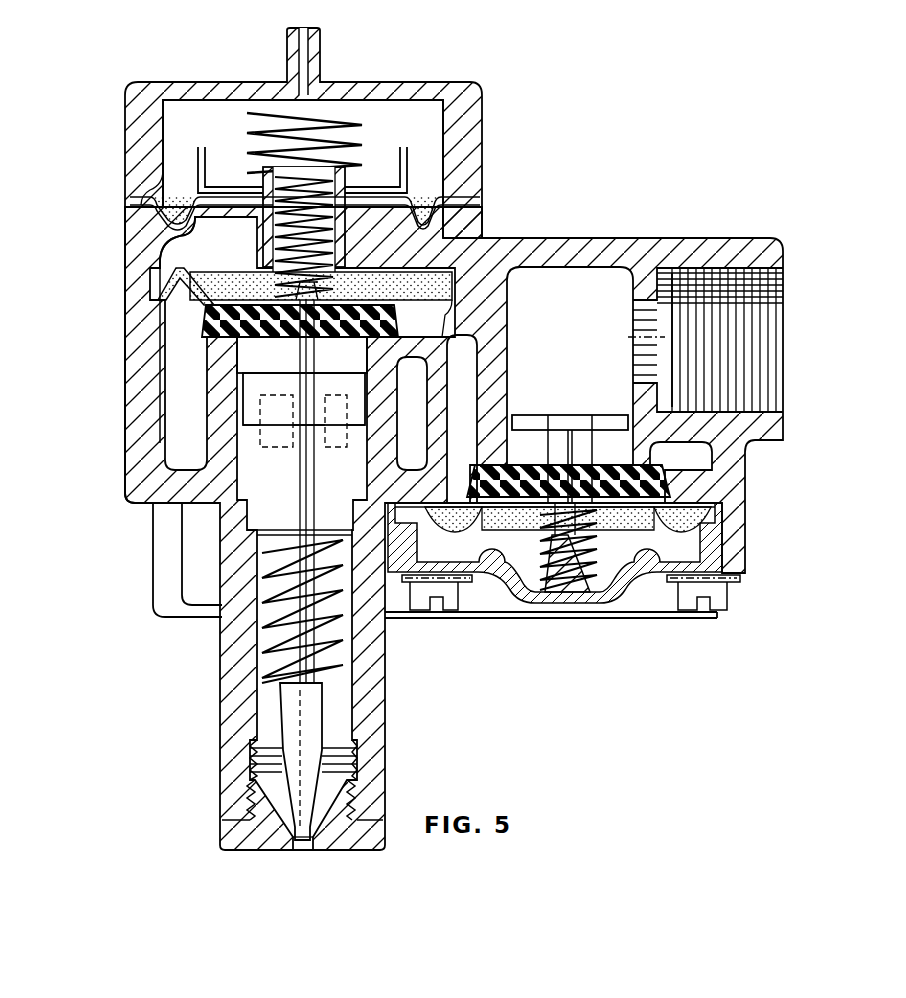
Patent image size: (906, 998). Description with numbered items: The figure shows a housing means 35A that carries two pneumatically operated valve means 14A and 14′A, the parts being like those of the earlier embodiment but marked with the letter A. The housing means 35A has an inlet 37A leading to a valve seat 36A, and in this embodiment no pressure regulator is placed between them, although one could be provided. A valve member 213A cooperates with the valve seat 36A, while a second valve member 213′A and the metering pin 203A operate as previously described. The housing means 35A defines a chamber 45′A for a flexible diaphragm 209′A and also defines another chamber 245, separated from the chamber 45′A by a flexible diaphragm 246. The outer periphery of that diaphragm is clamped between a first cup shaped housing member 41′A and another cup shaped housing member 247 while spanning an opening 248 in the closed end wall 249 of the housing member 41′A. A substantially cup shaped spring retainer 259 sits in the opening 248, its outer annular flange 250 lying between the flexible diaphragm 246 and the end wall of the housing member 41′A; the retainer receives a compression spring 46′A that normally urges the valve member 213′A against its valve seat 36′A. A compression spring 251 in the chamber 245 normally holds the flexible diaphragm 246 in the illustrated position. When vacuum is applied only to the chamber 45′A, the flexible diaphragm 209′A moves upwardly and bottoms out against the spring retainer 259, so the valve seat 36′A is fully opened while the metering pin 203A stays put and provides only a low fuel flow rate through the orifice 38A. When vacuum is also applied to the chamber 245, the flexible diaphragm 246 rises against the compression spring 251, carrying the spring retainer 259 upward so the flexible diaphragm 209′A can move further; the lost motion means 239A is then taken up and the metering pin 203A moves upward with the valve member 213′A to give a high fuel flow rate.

The pneumatically operated valve means 14′A is at (243, 58).
The cup shaped housing member 247 is at (388, 96).
The chamber 245 is at (184, 133).
The compression spring 251 is at (248, 135).
The spring retainer 259 is at (360, 160).
The outer annular flange 250 is at (412, 194).
The flexible diaphragm 246 is at (160, 200).
The cup shaped housing member 41′A is at (135, 233).
The housing means 35A is at (466, 238).
The chamber 45′A is at (178, 250).
The opening 248 is at (203, 268).
The closed end wall 249 is at (198, 255).
The compression spring 46′A is at (340, 240).
The flexible diaphragm 209′A is at (180, 272).
The valve member 213′A is at (212, 316).
The valve seat 36′A is at (228, 344).
The lost motion means 239A is at (250, 443).
The inlet 37A is at (765, 360).
The valve seat 36A is at (637, 462).
The valve member 213A is at (670, 481).
The pneumatically operated valve means 14A is at (618, 632).
The metering pin 203A is at (302, 724).
The orifice 38A is at (310, 850).